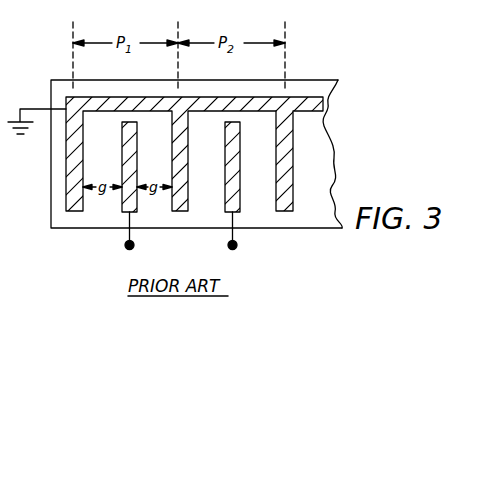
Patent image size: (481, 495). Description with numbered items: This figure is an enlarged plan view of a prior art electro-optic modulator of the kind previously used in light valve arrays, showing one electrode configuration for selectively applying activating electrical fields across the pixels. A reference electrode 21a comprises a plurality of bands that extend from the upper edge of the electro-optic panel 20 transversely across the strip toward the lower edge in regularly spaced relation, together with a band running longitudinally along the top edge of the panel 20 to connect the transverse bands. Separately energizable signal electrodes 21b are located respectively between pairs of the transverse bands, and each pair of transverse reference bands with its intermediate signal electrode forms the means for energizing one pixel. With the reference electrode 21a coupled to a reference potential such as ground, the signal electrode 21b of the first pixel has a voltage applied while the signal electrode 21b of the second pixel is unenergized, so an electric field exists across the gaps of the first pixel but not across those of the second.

The electro-optic panel 20 is at (335, 186).
The reference electrode 21a is at (272, 100).
The signal electrode 21b is at (123, 203).